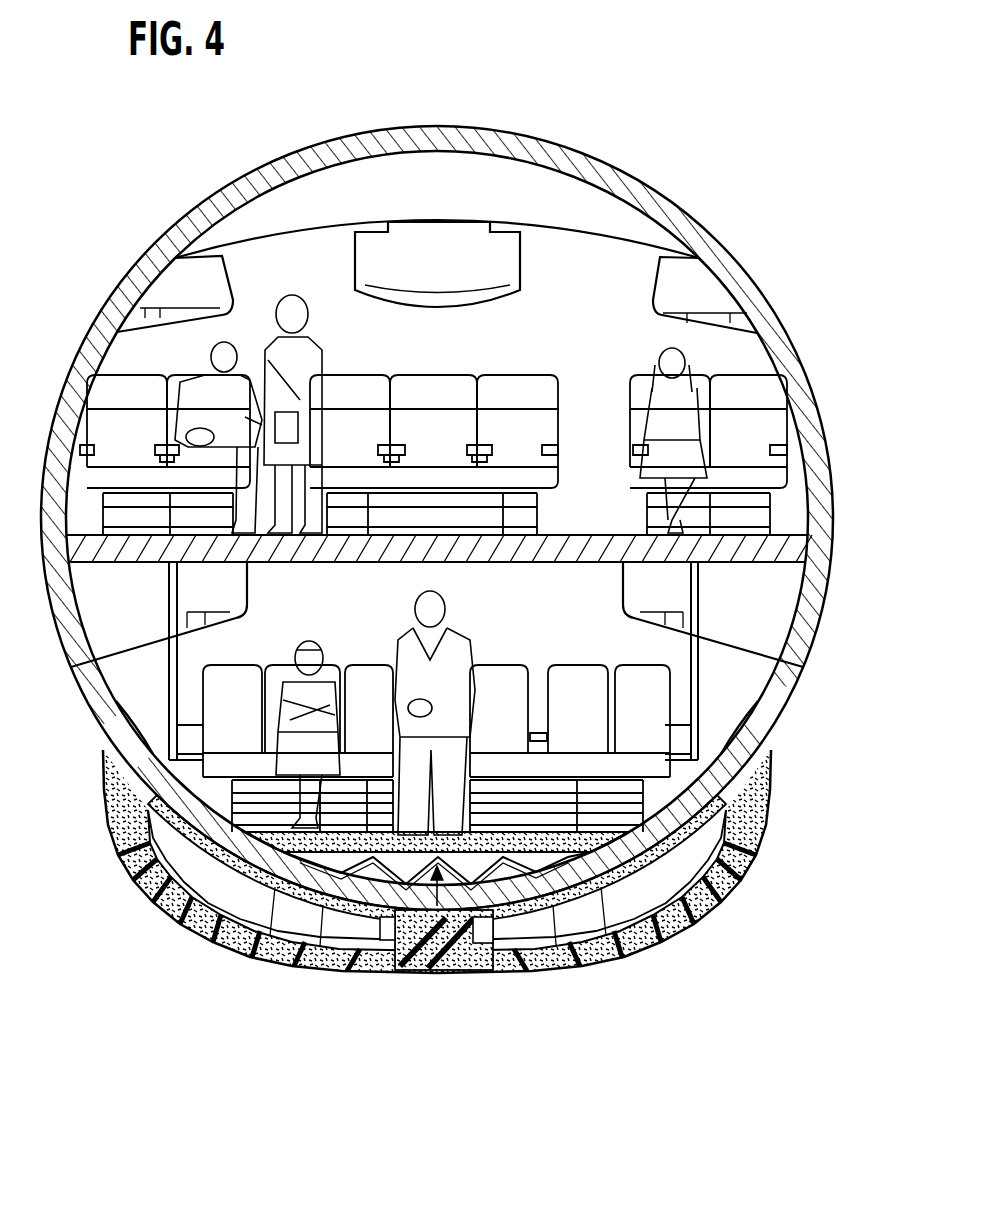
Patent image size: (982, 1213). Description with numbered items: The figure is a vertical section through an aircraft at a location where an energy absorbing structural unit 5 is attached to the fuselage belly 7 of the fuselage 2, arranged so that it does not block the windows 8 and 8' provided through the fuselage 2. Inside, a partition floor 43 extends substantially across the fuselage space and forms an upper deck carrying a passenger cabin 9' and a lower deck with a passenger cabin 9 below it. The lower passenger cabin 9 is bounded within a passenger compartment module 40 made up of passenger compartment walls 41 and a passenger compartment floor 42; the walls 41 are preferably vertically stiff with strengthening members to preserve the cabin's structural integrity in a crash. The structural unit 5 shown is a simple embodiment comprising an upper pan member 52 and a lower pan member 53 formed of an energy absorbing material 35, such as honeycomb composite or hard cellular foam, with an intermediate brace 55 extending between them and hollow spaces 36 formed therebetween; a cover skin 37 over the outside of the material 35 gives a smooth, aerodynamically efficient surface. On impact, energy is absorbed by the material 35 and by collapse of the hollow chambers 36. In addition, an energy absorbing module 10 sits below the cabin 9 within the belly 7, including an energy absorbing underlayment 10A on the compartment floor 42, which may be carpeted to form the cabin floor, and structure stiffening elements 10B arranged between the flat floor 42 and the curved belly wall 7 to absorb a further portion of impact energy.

The fuselage 2 is at (586, 170).
The passenger cabin on the upper deck 9' is at (437, 276).
The partition floor 43 is at (623, 537).
The passenger cabin on the lower deck 9 is at (436, 660).
The passenger compartment module 40 is at (158, 611).
The passenger compartment walls 41 is at (177, 683).
The window 8 is at (91, 727).
The window 8' is at (785, 723).
The lower pan member 53 is at (102, 792).
The upper pan member 52 is at (112, 837).
The energy absorbing structural unit 5 is at (183, 923).
The passenger compartment floor 42 is at (268, 942).
The fuselage belly 7 is at (318, 925).
The cover skin 37 is at (367, 973).
The energy absorbing module 10 is at (415, 975).
The intermediate brace 55 is at (460, 973).
The structure stiffening elements 10B is at (496, 950).
The energy absorbing underlayment 10A is at (613, 883).
The hollow spaces 36 is at (705, 862).
The energy absorbing material 35 is at (697, 907).